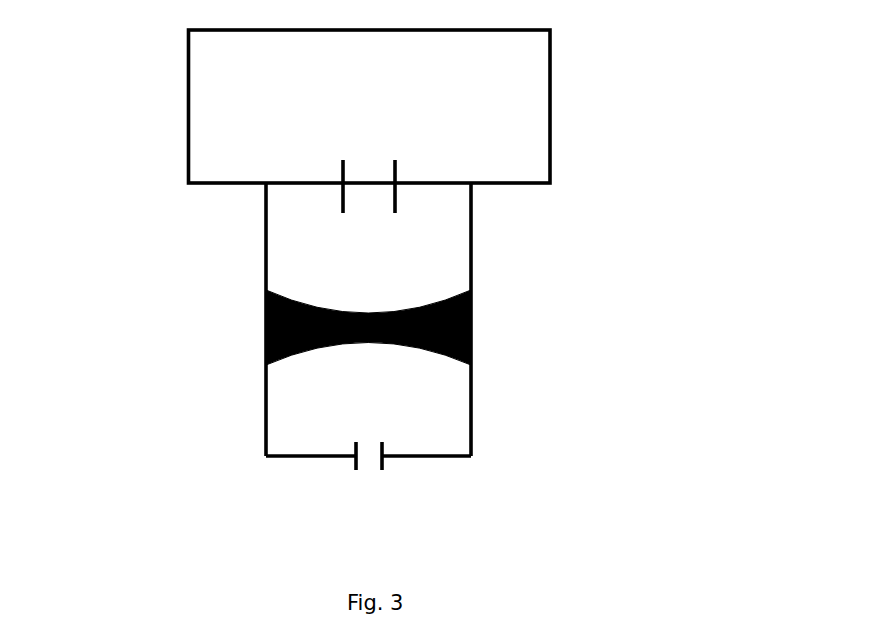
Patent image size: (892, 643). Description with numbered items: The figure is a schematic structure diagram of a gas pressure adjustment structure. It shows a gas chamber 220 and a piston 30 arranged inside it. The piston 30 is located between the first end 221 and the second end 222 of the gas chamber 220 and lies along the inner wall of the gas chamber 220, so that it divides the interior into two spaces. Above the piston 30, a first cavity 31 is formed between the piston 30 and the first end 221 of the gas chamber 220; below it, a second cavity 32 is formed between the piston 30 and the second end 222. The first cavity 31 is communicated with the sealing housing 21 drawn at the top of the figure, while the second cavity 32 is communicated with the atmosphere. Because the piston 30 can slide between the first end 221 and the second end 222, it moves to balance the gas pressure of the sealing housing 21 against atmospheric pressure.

The sealing housing 21 is at (445, 135).
The gas chamber 220 is at (471, 264).
The first end 221 is at (434, 186).
The second end 222 is at (437, 457).
The first cavity 31 is at (317, 263).
The piston 30 is at (266, 328).
The second cavity 32 is at (318, 418).